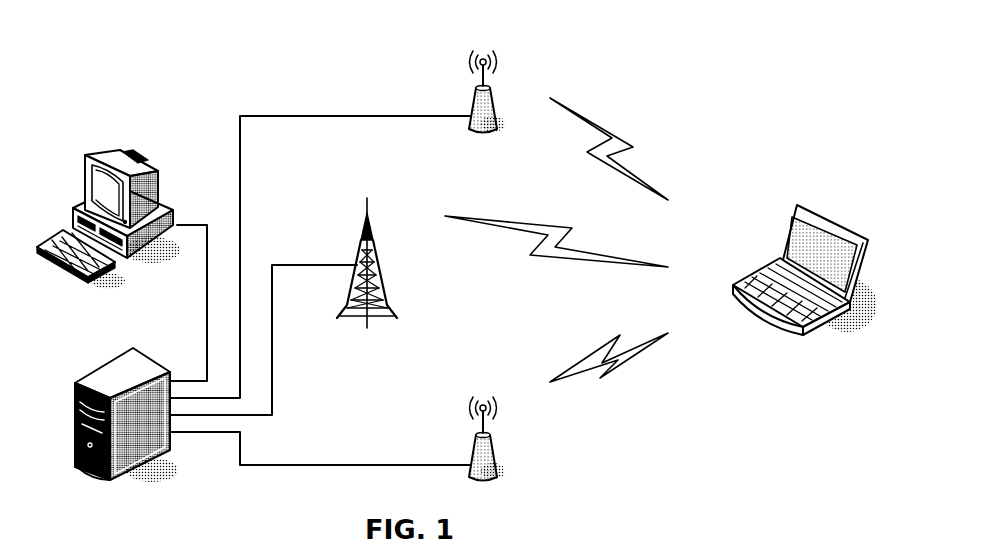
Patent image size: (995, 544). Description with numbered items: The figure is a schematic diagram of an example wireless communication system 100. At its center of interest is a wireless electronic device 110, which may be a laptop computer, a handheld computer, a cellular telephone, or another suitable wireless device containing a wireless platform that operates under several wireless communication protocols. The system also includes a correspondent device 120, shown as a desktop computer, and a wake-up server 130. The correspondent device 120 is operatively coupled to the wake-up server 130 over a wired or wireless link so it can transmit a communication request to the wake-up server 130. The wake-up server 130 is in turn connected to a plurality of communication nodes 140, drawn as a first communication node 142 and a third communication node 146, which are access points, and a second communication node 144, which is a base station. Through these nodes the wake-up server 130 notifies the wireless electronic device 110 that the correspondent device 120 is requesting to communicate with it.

The wireless communication system 100 is at (103, 46).
The wireless electronic device 110 is at (808, 203).
The correspondent device 120 is at (110, 155).
The wake-up server 130 is at (110, 363).
The plurality of communication nodes 140 is at (405, 78).
The first communication node 142 is at (493, 98).
The second communication node 144 is at (373, 247).
The third communication node 146 is at (493, 453).